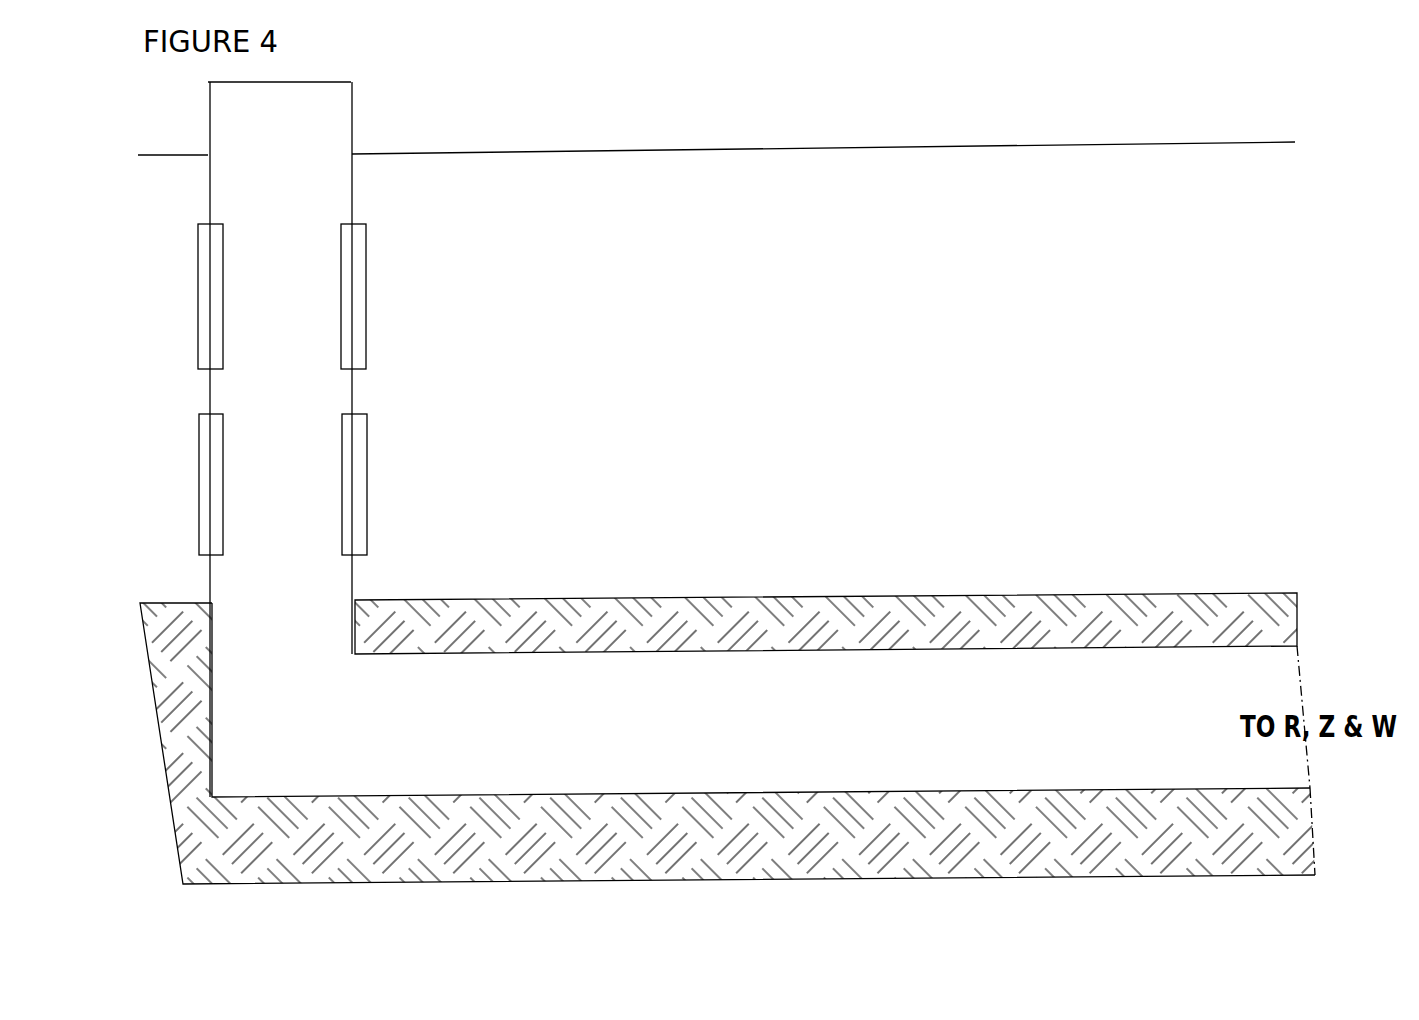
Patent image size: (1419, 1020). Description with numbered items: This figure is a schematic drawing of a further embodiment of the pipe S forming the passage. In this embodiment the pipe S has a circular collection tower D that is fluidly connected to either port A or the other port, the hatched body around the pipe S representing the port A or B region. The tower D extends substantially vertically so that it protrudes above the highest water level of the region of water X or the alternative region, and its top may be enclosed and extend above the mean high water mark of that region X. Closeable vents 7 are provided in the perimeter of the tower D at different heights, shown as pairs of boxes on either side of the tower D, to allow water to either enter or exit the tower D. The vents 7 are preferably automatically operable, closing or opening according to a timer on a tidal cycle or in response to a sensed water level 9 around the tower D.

The closeable vents 7 is at (278, 389).
The sensed water level 9 is at (716, 127).
The circular collection tower D is at (280, 439).
The pipe S is at (760, 721).
The port A is at (727, 743).
The region of water X is at (825, 375).